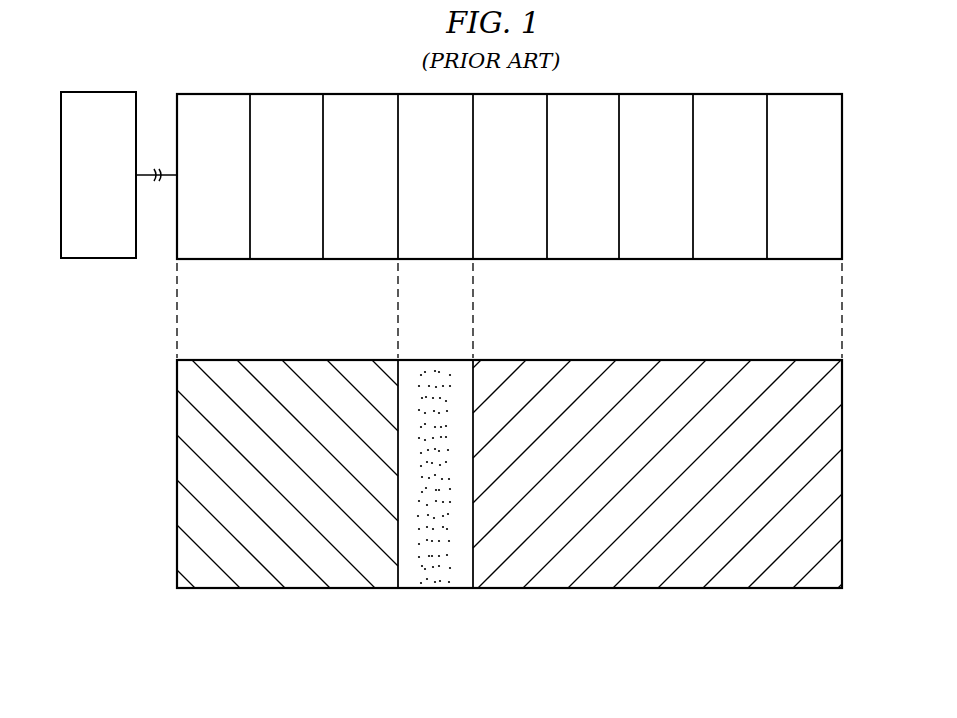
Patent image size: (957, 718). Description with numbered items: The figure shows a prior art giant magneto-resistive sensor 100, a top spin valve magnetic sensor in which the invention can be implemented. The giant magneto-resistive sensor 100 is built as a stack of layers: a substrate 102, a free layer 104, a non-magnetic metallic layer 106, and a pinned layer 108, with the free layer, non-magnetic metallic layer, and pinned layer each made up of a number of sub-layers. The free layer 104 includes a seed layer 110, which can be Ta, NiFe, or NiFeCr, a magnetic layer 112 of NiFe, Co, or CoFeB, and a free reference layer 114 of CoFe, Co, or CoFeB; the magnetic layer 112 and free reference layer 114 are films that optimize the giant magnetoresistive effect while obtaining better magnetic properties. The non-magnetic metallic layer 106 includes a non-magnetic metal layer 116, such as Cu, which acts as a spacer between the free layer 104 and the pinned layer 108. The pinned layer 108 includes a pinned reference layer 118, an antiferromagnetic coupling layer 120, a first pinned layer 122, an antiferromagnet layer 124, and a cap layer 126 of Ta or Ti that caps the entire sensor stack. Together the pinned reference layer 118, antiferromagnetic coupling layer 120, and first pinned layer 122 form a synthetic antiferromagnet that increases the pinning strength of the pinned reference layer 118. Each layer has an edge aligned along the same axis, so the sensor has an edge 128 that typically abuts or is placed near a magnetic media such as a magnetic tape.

The giant magneto-resistive sensor 100 is at (700, 634).
The substrate 102 is at (95, 258).
The free layer 104 is at (259, 588).
The non-magnetic metallic layer 106 is at (433, 588).
The pinned layer 108 is at (770, 590).
The seed layer 110 is at (214, 259).
The magnetic layer 112 is at (276, 259).
The free reference layer 114 is at (350, 259).
The non-magnetic metal layer 116 is at (435, 259).
The pinned reference layer 118 is at (513, 259).
The antiferromagnetic coupling layer 120 is at (585, 259).
The first pinned layer 122 is at (657, 259).
The antiferromagnet layer 124 is at (727, 259).
The cap layer 126 is at (805, 260).
The edge 128 is at (600, 92).